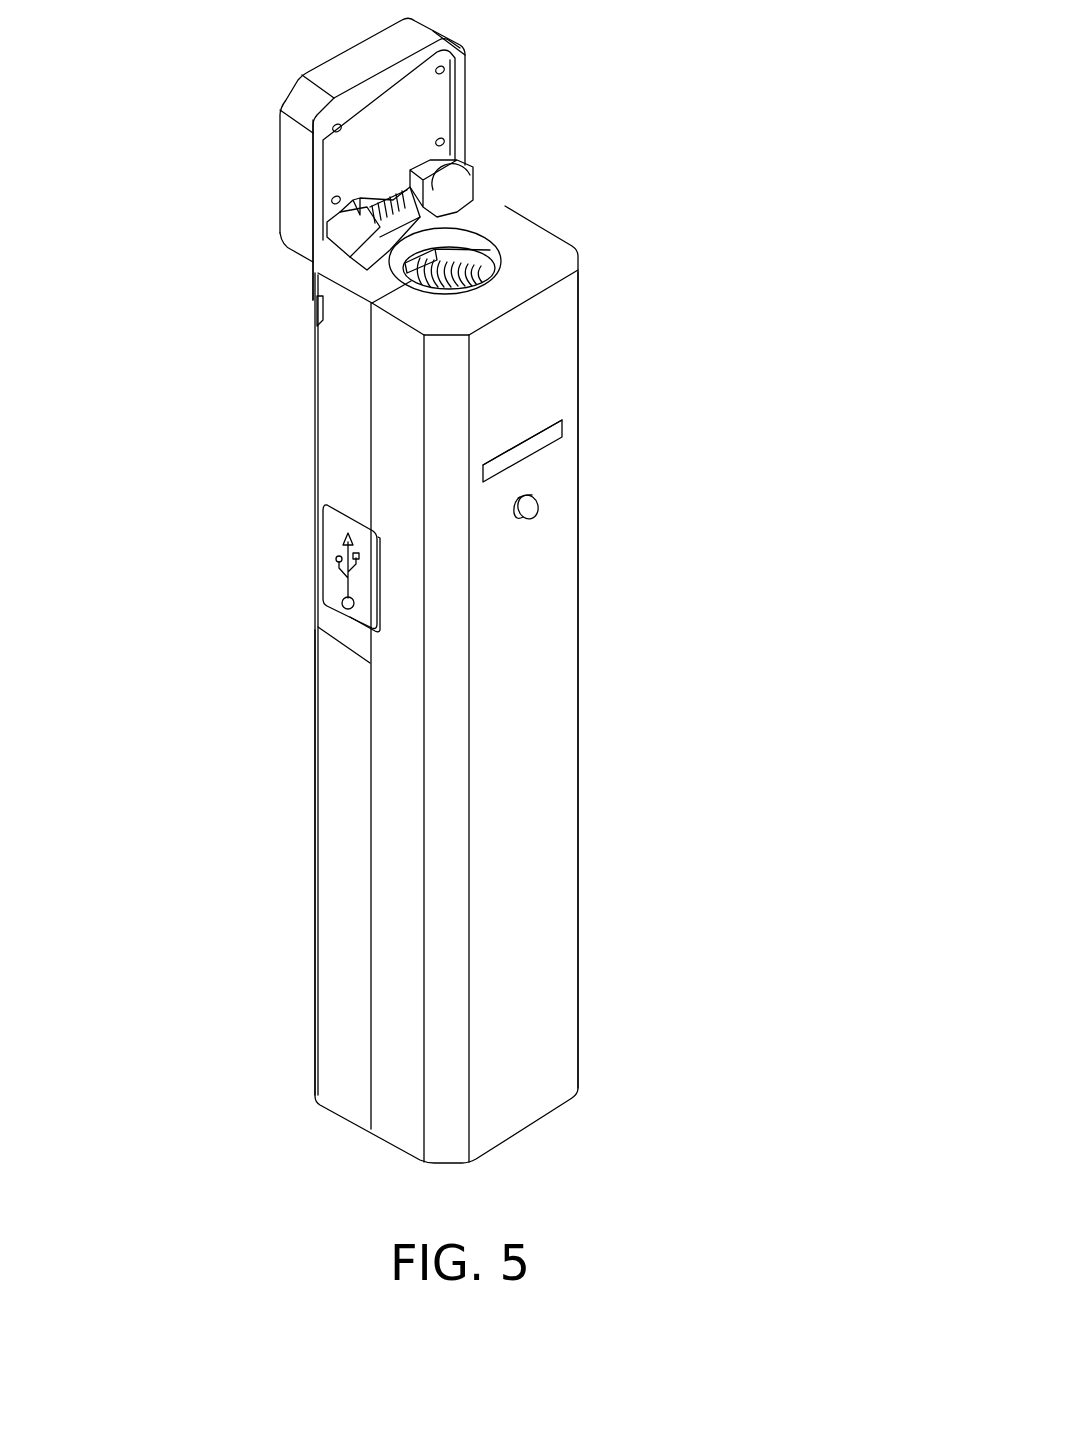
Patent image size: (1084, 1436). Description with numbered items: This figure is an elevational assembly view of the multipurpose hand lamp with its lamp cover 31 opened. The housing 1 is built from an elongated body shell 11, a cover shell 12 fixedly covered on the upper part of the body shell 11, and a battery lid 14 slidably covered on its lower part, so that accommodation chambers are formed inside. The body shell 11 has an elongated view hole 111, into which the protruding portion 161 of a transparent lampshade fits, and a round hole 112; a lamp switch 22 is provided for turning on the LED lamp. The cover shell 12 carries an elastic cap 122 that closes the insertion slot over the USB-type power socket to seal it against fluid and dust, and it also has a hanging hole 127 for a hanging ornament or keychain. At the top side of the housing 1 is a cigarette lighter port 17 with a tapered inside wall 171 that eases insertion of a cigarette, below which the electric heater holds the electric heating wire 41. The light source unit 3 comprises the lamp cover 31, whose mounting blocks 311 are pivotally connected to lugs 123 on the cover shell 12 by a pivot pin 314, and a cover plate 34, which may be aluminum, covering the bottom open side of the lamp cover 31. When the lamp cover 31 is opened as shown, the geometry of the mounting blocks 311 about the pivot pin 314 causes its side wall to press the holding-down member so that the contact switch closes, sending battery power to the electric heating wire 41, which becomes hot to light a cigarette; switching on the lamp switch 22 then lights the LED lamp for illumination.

The housing 1 is at (672, 402).
The elongated body shell 11 is at (558, 695).
The cover shell 12 is at (339, 397).
The battery lid 14 is at (342, 805).
The cigarette lighter port 17 is at (510, 267).
The tapered inside wall 171 is at (493, 257).
The lamp switch 22 is at (530, 508).
The light source unit 3 is at (350, 159).
The lamp cover 31 is at (348, 62).
The cover plate 34 is at (437, 97).
The electric heating wire 41 is at (462, 262).
The elongated view hole 111 is at (543, 425).
The round hole 112 is at (532, 492).
The elastic cap 122 is at (338, 552).
The lugs 123 is at (443, 193).
The hanging hole 127 is at (315, 302).
The protruding portion 161 is at (537, 446).
The mounting blocks 311 is at (363, 220).
The pivot pin 314 is at (393, 214).